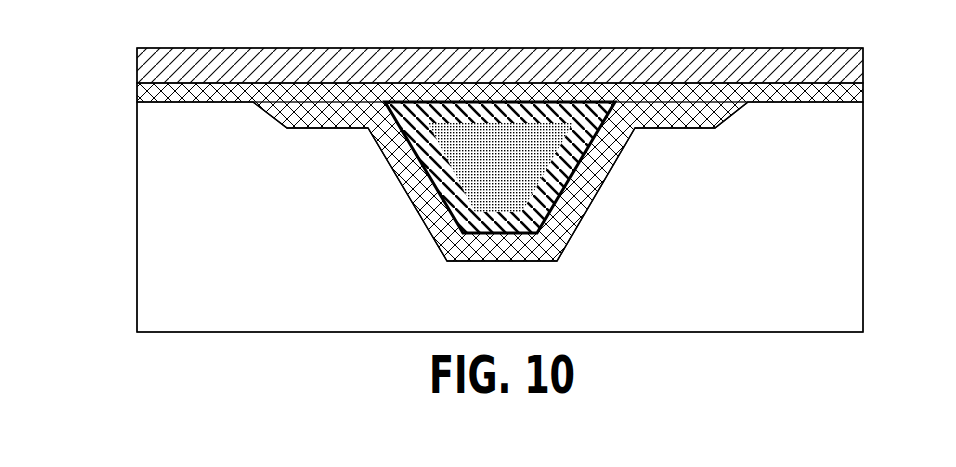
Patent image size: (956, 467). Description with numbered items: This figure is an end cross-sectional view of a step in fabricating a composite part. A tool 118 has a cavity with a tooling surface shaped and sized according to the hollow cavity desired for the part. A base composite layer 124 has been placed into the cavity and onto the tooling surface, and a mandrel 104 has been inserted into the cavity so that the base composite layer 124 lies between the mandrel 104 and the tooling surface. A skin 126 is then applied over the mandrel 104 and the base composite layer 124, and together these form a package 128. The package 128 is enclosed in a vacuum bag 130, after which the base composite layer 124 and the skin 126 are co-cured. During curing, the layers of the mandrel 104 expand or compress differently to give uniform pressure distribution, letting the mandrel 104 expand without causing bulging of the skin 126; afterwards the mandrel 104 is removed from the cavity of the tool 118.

The mandrel 104 is at (466, 93).
The tool 118 is at (132, 202).
The base composite layer 124 is at (353, 90).
The skin 126 is at (266, 80).
The package 128 is at (67, 83).
The vacuum bag 130 is at (161, 38).